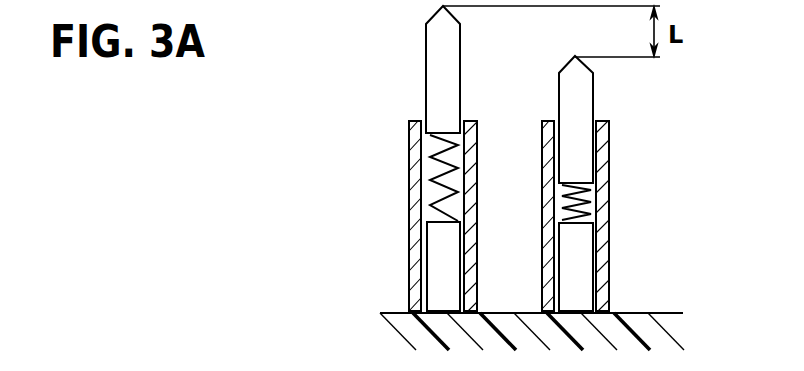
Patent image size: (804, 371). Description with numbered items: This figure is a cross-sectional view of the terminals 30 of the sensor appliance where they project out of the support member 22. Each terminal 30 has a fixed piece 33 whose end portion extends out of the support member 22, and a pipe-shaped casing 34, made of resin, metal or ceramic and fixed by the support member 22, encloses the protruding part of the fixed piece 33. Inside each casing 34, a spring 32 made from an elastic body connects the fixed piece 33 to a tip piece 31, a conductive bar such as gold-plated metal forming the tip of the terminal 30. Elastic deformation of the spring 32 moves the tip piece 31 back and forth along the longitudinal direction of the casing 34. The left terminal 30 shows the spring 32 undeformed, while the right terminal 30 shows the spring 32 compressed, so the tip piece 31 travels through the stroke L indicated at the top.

The support member 22 is at (396, 312).
The terminal 30 is at (409, 155).
The tip piece 31 is at (577, 167).
The spring 32 is at (590, 200).
The fixed piece 33 is at (577, 240).
The casing 34 is at (605, 266).